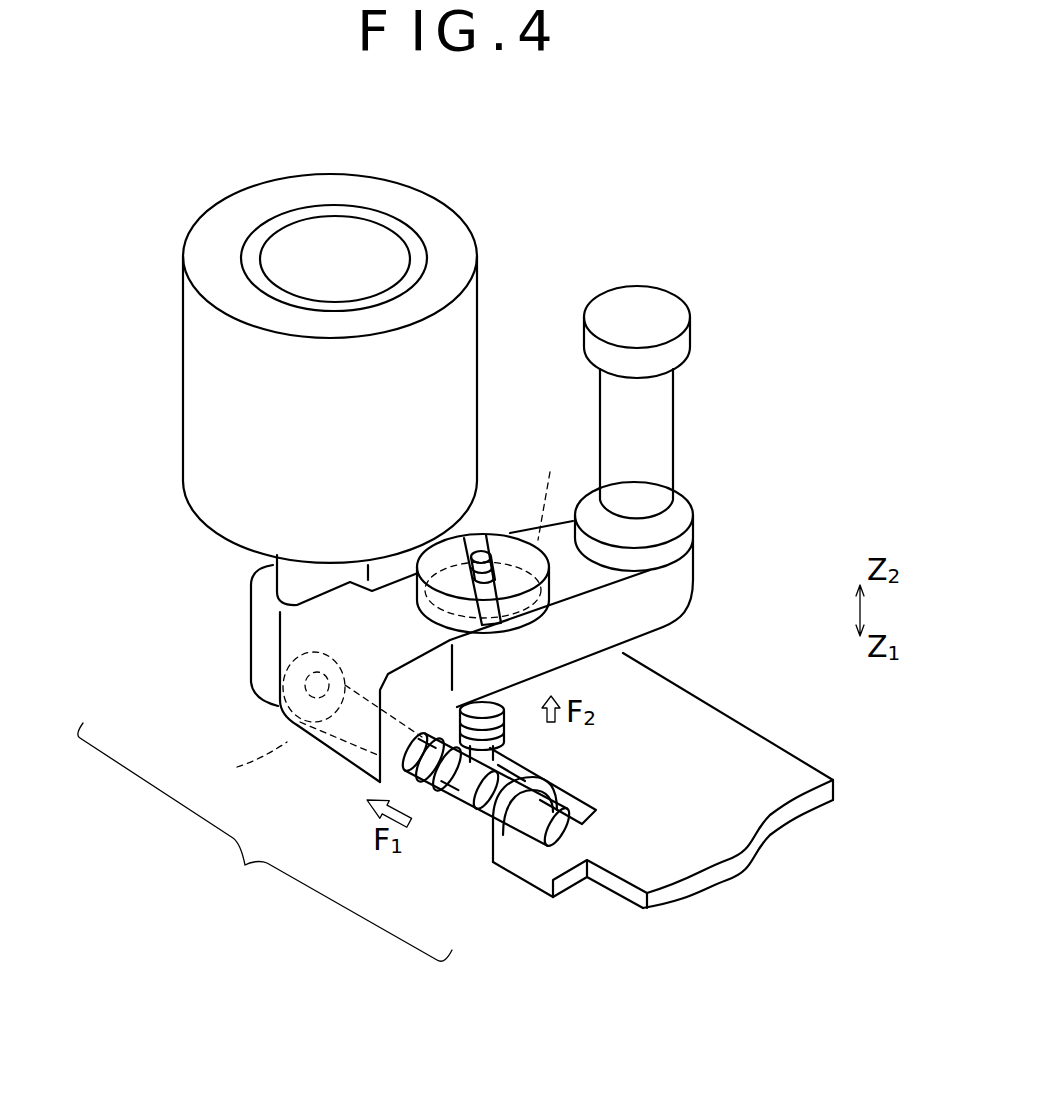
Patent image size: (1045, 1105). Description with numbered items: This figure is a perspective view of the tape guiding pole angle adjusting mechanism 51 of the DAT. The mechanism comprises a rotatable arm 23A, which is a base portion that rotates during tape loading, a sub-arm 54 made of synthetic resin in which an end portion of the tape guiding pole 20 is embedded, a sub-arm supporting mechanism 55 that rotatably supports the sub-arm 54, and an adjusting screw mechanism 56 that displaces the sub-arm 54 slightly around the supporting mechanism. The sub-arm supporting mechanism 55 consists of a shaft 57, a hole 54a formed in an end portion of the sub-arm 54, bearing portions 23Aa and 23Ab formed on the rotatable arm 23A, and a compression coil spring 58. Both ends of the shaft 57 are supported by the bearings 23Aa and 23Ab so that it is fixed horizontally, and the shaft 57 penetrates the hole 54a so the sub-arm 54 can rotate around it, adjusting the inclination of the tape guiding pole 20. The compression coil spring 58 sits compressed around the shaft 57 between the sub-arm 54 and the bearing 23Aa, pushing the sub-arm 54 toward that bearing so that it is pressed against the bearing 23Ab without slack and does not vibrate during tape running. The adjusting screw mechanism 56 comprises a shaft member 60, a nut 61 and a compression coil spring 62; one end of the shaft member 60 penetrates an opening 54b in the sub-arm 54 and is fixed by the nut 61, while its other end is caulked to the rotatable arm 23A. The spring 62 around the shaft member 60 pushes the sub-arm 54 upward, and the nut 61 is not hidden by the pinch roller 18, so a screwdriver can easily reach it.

The pinch roller 18 is at (183, 327).
The tape guiding pole 20 is at (684, 288).
The tape guiding pole angle adjusting mechanism 51 is at (592, 160).
The sub-arm 54 is at (683, 576).
The hole 54a is at (232, 764).
The opening 54b is at (555, 490).
The sub-arm supporting mechanism 55 is at (265, 842).
The adjusting screw mechanism 56 is at (505, 512).
The shaft 57 is at (462, 800).
The compression coil spring 58 is at (385, 790).
The shaft member 60 is at (478, 550).
The nut 61 is at (435, 562).
The compression coil spring 62 is at (510, 730).
The rotatable arm 23A is at (735, 728).
The bearing portion 23Aa is at (497, 832).
The bearing portion 23Ab is at (243, 686).